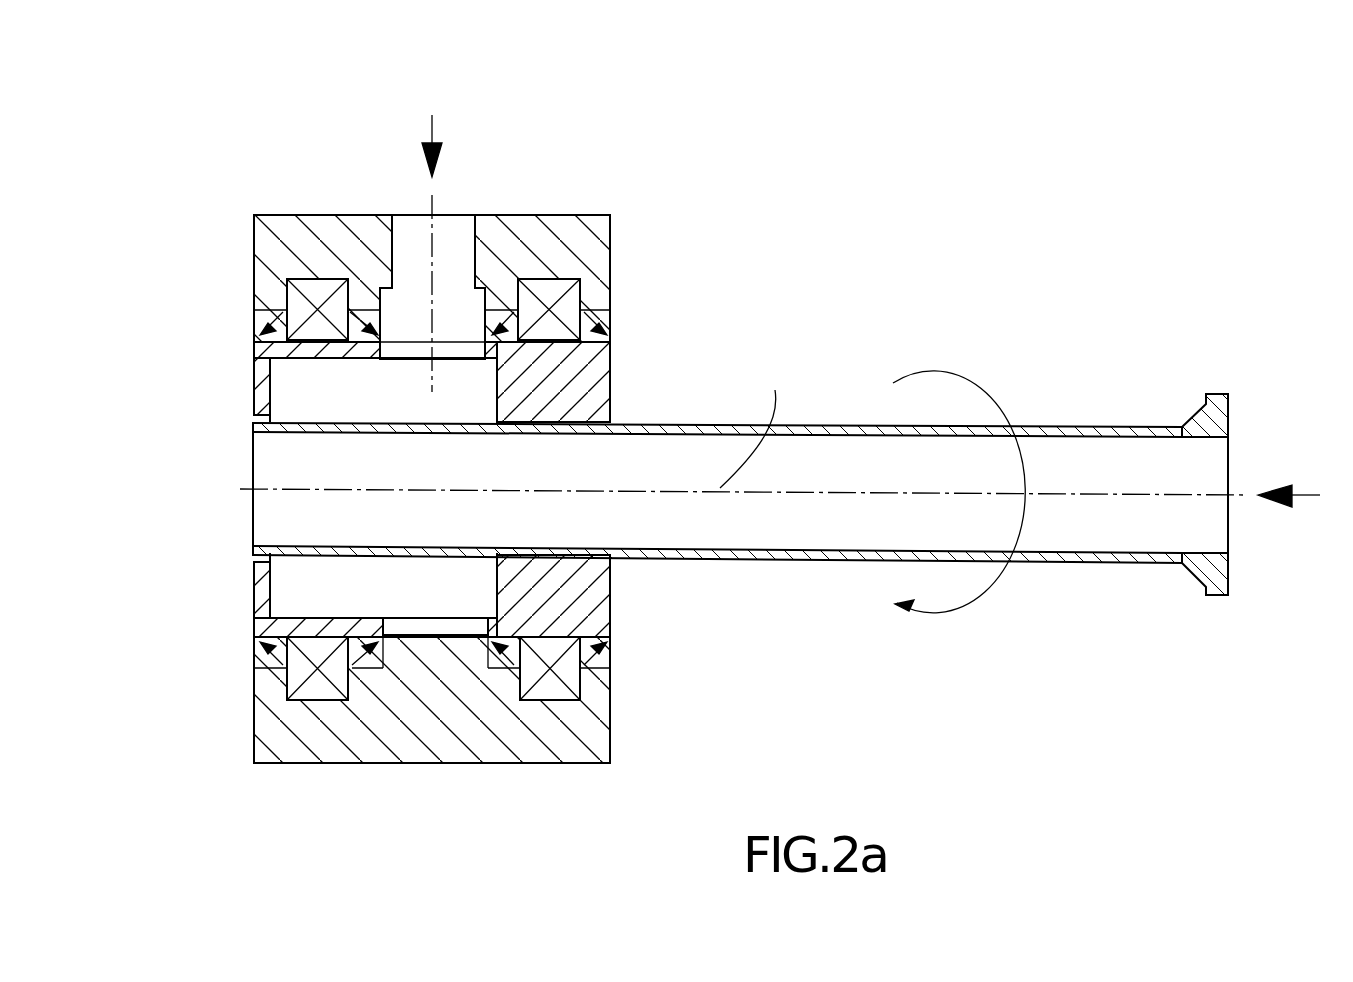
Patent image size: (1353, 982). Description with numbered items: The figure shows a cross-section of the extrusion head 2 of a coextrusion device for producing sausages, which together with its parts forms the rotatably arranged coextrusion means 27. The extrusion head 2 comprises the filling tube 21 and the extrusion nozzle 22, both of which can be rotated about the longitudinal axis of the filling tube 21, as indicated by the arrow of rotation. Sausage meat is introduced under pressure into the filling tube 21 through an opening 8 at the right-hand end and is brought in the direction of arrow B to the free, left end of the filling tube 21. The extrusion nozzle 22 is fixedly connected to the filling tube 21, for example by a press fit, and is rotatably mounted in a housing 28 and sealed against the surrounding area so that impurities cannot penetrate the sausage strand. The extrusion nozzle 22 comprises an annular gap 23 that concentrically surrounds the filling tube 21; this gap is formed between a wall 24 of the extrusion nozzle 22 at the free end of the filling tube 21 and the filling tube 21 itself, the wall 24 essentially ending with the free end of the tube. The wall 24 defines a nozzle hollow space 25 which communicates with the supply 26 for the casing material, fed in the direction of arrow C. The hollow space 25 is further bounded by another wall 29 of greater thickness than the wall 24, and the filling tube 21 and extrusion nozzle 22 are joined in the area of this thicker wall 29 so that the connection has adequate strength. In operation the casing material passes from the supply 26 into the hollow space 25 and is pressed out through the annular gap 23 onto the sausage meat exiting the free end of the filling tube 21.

The extrusion head 2 is at (313, 158).
The opening 8 is at (1230, 460).
The filling tube 21 is at (692, 425).
The extrusion nozzle 22 is at (600, 590).
The annular gap 23 is at (252, 560).
The wall 24 is at (258, 372).
The nozzle hollow space 25 is at (297, 397).
The supply 26 is at (452, 225).
The coextrusion means 27 is at (203, 514).
The housing 28 is at (600, 730).
The wall 29 is at (600, 378).